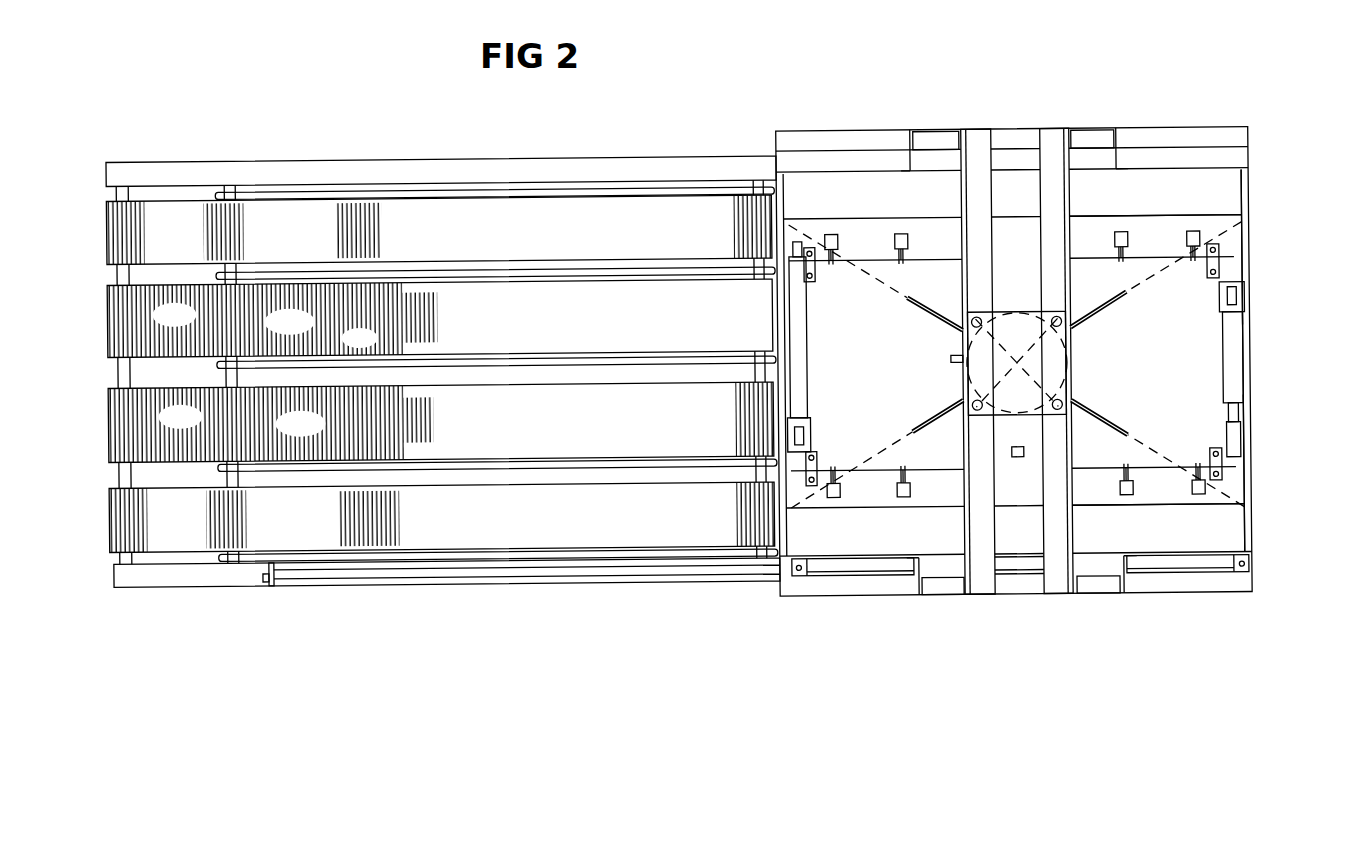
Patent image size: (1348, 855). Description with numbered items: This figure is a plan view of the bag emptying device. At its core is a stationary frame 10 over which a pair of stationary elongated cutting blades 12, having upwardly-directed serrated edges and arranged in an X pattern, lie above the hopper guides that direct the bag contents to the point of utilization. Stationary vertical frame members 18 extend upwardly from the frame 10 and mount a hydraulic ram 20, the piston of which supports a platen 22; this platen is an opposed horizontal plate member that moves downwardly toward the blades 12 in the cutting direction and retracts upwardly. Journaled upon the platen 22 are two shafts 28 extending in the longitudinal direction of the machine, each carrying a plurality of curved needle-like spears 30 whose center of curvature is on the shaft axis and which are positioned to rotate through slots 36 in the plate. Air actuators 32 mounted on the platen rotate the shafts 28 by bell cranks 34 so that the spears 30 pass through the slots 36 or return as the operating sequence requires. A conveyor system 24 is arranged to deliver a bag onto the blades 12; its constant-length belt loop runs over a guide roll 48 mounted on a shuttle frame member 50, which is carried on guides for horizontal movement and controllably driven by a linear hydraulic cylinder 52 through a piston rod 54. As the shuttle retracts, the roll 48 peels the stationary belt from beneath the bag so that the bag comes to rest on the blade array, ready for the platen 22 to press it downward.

The stationary frame 10 is at (1101, 128).
The stationary elongated cutting blades 12 is at (1232, 240).
The stationary vertical frame members 18 is at (1087, 149).
The hydraulic ram 20 is at (1053, 362).
The platen 22 is at (1242, 492).
The conveyor system 24 is at (416, 211).
The shafts 28 is at (843, 270).
The curved needle-like spears 30 is at (832, 236).
The air actuators 32 is at (808, 355).
The bell cranks 34 is at (804, 300).
The slots 36 is at (904, 236).
The guide roll 48 is at (767, 173).
The shuttle frame member 50 is at (263, 560).
The linear hydraulic cylinder 52 is at (856, 580).
The piston rod 54 is at (452, 570).